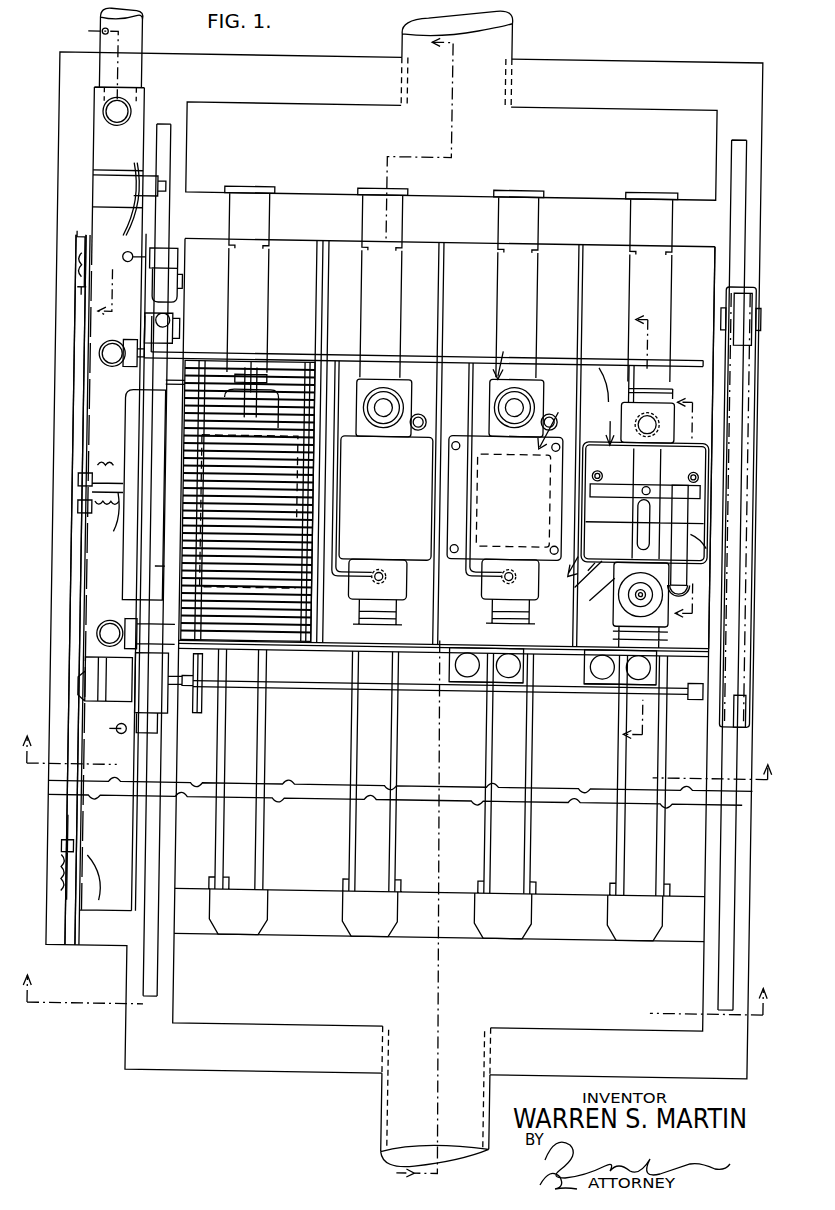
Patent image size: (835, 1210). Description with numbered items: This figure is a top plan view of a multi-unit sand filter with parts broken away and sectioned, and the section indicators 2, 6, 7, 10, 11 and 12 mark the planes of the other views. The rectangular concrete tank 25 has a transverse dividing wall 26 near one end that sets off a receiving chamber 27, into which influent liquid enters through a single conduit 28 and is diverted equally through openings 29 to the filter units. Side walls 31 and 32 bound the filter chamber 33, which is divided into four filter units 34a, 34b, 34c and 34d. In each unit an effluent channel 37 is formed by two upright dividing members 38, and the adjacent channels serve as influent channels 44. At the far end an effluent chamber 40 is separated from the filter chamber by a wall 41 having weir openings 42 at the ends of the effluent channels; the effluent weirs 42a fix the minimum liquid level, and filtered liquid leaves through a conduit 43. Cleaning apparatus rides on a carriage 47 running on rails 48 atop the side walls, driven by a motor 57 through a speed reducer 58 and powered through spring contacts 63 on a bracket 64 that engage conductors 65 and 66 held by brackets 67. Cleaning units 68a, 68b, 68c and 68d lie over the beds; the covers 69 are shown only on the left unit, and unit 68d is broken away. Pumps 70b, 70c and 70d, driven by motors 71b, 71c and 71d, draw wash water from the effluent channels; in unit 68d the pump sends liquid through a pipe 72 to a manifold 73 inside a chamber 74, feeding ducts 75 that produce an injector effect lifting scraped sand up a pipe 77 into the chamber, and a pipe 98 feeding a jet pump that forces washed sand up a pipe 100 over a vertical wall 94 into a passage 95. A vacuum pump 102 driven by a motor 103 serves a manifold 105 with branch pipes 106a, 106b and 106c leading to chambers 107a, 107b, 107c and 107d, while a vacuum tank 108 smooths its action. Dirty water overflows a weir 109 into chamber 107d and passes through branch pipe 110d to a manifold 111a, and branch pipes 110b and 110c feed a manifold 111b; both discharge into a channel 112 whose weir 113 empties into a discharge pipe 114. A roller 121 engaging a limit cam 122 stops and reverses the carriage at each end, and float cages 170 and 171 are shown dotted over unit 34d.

The section line 2- 2 is at (401, 745).
The section line 6- 6 is at (636, 527).
The section line 7- 7 is at (684, 509).
The section line 10- 10 is at (413, 608).
The section line 11- 11 is at (394, 979).
The section line 12-12 / pipe end 12 is at (105, 178).
The tank 25 is at (128, 1063).
The transverse dividing wall 26 is at (326, 937).
The receiving chamber 27 is at (286, 1002).
The conduit 28 is at (392, 1116).
The openings 29 is at (286, 932).
The side wall 31 is at (164, 986).
The side wall 32 is at (716, 876).
The filter chamber 33 is at (706, 286).
The filter unit 34a is at (260, 273).
The filter unit 34b is at (378, 294).
The filter unit 34c is at (510, 278).
The filter unit 34d is at (642, 275).
The effluent channel 37 is at (374, 828).
The dividing members 38 is at (392, 732).
The effluent chamber 40 is at (622, 122).
The wall 41 is at (452, 208).
The weir openings 42 is at (254, 212).
The effluent weirs 42a is at (372, 190).
The conduit 43 is at (505, 36).
The influent channels 44 is at (288, 874).
The carriage 47 is at (158, 582).
The rails 48 is at (150, 855).
The motor 57 is at (118, 706).
The speed reducer 58 is at (172, 712).
The spring contacts 63 is at (77, 510).
The bracket 64 is at (106, 519).
The conductor 65 is at (70, 452).
The conductor 66 is at (76, 464).
The brackets 67 is at (70, 248).
The cleaning unit 68a is at (264, 392).
The cleaning unit 68b is at (495, 372).
The cleaning unit 68c is at (552, 420).
The cleaning unit 68d is at (608, 418).
The covers 69 is at (254, 364).
The pump 70b is at (376, 414).
The pump 70c is at (506, 412).
The pump 70d is at (628, 598).
The motor 71b is at (364, 430).
The motor 71c is at (491, 440).
The motor 71d is at (636, 592).
The pipe 72 is at (690, 580).
The manifold 73 is at (676, 512).
The chamber 74 is at (561, 575).
The duct 75 is at (604, 494).
The pipe 77 is at (688, 472).
The vertical wall 94 is at (702, 542).
The vertical passage 95 is at (618, 576).
The pipe 98 is at (642, 490).
The pipe 100 is at (644, 532).
The rotary vacuum pump 102 is at (174, 328).
The motor 103 is at (172, 278).
The manifold 105 is at (394, 354).
The branch pipe 106a is at (238, 364).
The branch pipe 106b is at (336, 494).
The branch pipe 106c is at (472, 511).
The chamber 107a is at (182, 411).
The chamber 107b is at (392, 572).
The chamber 107c is at (530, 570).
The chamber 107d is at (606, 399).
The vacuum tank 108 is at (126, 432).
The weir 109 is at (666, 440).
The branch pipe 110b is at (382, 626).
The branch pipe 110c is at (514, 622).
The branch pipe 110d is at (650, 396).
The manifold 111a is at (96, 358).
The manifold 111b is at (98, 636).
The channel 112 is at (98, 388).
The weir 113 is at (96, 172).
The discharge pipe 114 is at (138, 74).
The roller 121 is at (118, 259).
The limit stop 122 is at (120, 236).
The guide 170 is at (476, 682).
The guide 171 is at (514, 686).